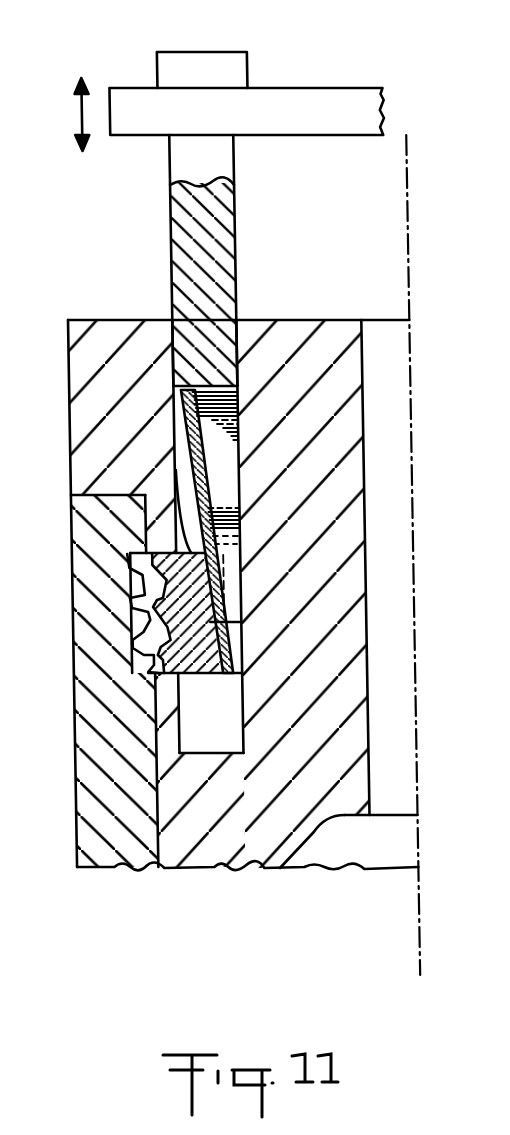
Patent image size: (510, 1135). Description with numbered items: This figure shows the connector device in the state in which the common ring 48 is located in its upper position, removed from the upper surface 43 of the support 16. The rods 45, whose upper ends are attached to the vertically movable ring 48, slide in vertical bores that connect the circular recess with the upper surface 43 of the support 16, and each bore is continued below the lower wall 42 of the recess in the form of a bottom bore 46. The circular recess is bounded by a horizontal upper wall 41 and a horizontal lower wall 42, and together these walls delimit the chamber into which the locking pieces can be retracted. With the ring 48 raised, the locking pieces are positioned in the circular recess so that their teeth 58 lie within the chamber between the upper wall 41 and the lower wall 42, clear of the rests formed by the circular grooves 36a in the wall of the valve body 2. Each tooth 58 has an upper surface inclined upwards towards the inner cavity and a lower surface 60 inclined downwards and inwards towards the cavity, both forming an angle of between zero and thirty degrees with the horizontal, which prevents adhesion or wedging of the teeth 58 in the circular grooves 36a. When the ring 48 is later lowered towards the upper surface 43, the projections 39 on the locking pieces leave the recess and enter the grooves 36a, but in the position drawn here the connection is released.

The ring 48 is at (130, 98).
The rod 45 is at (202, 300).
The upper surface of the support 43 is at (117, 320).
The support 16 is at (77, 368).
The valve body 2 is at (88, 524).
The lower surface of tooth 60 is at (214, 452).
The lower wall 42 is at (186, 680).
The upper wall 41 is at (159, 497).
The projections 39 is at (152, 610).
The circular grooves 36a is at (118, 572).
The teeth 58 is at (146, 662).
The bottom bore 46 is at (191, 727).